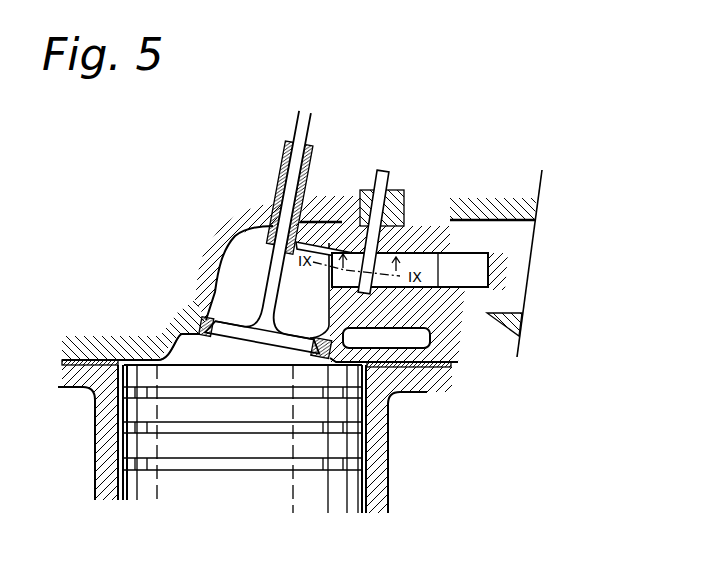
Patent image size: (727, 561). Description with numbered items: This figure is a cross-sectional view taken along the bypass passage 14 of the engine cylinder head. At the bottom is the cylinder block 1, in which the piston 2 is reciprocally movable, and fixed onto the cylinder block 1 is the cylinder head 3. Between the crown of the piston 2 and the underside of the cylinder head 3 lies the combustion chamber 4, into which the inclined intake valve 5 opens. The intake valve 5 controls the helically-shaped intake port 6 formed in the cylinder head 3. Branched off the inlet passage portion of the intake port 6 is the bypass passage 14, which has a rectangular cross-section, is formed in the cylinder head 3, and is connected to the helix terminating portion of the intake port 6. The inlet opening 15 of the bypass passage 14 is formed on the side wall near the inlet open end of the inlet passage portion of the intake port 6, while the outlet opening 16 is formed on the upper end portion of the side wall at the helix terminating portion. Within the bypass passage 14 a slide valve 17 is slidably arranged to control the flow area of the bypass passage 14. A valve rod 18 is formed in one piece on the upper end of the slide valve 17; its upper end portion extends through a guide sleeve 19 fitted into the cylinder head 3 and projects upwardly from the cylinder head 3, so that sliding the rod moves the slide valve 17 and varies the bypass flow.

The cylinder block 1 is at (100, 441).
The piston 2 is at (170, 492).
The cylinder head 3 is at (155, 340).
The combustion chamber 4 is at (194, 356).
The intake valve 5 is at (262, 283).
The helically-shaped intake port 6 is at (490, 228).
The bypass passage 14 is at (418, 252).
The inlet opening 15 is at (466, 288).
The outlet opening 16 is at (317, 275).
The slide valve 17 is at (333, 212).
The valve rod 18 is at (384, 171).
The guide sleeve 19 is at (366, 190).